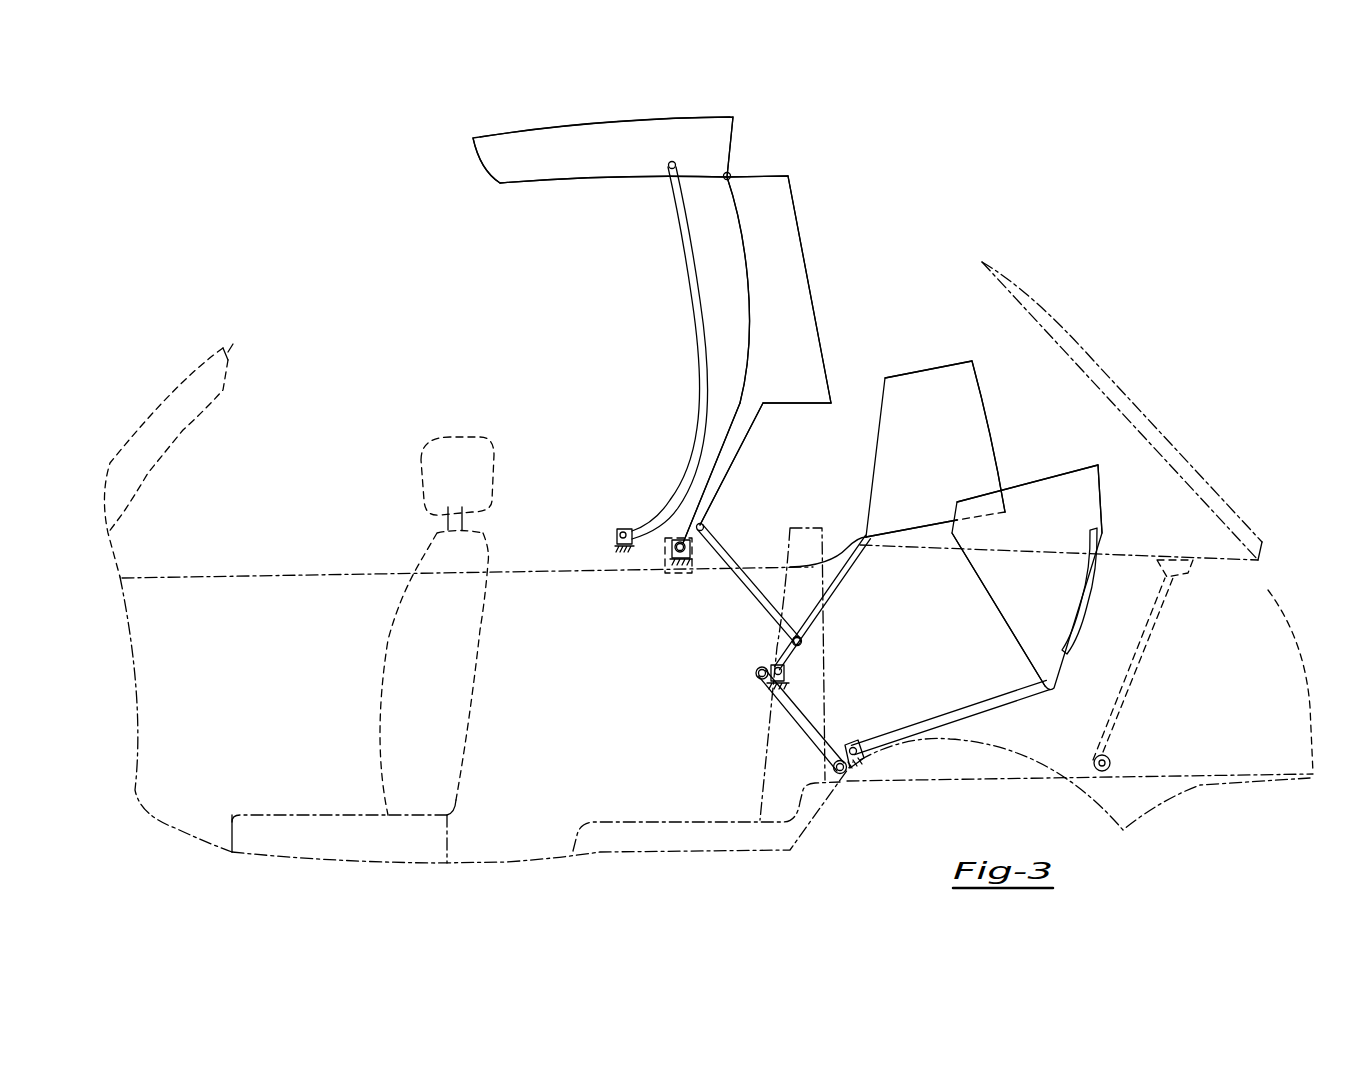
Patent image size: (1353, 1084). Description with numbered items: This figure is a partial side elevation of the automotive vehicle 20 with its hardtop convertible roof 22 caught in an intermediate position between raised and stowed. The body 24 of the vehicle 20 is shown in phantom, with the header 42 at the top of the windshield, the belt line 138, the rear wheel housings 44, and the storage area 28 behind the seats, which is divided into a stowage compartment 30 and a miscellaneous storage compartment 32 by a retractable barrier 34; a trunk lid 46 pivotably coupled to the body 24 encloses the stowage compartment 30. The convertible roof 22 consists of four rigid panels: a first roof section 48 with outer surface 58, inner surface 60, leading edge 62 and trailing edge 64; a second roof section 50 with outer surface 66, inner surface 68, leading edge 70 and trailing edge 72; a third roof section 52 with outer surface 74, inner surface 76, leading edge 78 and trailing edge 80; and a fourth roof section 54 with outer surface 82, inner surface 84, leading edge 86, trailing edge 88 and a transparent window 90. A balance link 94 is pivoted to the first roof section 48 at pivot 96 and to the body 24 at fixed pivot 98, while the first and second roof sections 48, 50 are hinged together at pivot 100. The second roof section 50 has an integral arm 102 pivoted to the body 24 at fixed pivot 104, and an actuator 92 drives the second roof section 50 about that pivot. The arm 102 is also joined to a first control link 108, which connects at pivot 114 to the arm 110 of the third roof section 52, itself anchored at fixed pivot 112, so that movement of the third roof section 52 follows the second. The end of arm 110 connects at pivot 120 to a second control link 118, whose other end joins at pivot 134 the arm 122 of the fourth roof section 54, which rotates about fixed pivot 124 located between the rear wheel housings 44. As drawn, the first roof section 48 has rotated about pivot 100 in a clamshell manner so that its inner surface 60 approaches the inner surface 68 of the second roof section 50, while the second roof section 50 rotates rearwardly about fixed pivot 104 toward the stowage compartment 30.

The automotive vehicle 20 is at (930, 208).
The hardtop convertible roof 22 is at (553, 327).
The body 24 is at (521, 820).
The storage area 28 is at (1245, 733).
The stowage compartment 30 is at (1116, 667).
The miscellaneous storage compartment 32 is at (1265, 603).
The retractable barrier 34 is at (1153, 645).
The header 42 is at (228, 352).
The rear wheel housings 44 is at (903, 823).
The trunk lid 46 is at (1157, 433).
The first roof section 48 is at (626, 156).
The second roof section 50 is at (771, 231).
The third roof section 52 is at (938, 434).
The fourth roof section 54 is at (1052, 535).
The outer surface 58 is at (537, 130).
The inner surface 60 is at (560, 185).
The leading edge 62 is at (495, 170).
The trailing edge 64 is at (737, 137).
The outer surface 66 is at (803, 233).
The inner surface 68 is at (745, 284).
The leading edge 70 is at (786, 177).
The trailing edge 72 is at (785, 405).
The outer surface 74 is at (980, 385).
The inner surface 76 is at (870, 431).
The leading edge 78 is at (927, 373).
The trailing edge 80 is at (923, 527).
The outer surface 82 is at (1098, 505).
The inner surface 84 is at (990, 603).
The leading edge 86 is at (1042, 477).
The trailing edge 88 is at (1018, 643).
The transparent window 90 is at (1080, 610).
The actuator 92 is at (668, 578).
The balance link 94 is at (693, 302).
The pivot 96 is at (673, 162).
The fixed pivot 98 is at (620, 530).
The pivot 100 is at (728, 175).
The arm 102 is at (723, 473).
The fixed pivot 104 is at (677, 550).
The first control link 108 is at (740, 572).
The arm 110 is at (703, 518).
The fixed pivot 112 is at (787, 670).
The pivot 114 is at (797, 643).
The second control link 118 is at (803, 725).
The pivot 120 is at (760, 677).
The arm 122 is at (1010, 700).
The fixed pivot 124 is at (850, 743).
The pivot 134 is at (847, 777).
The belt line 138 is at (572, 562).